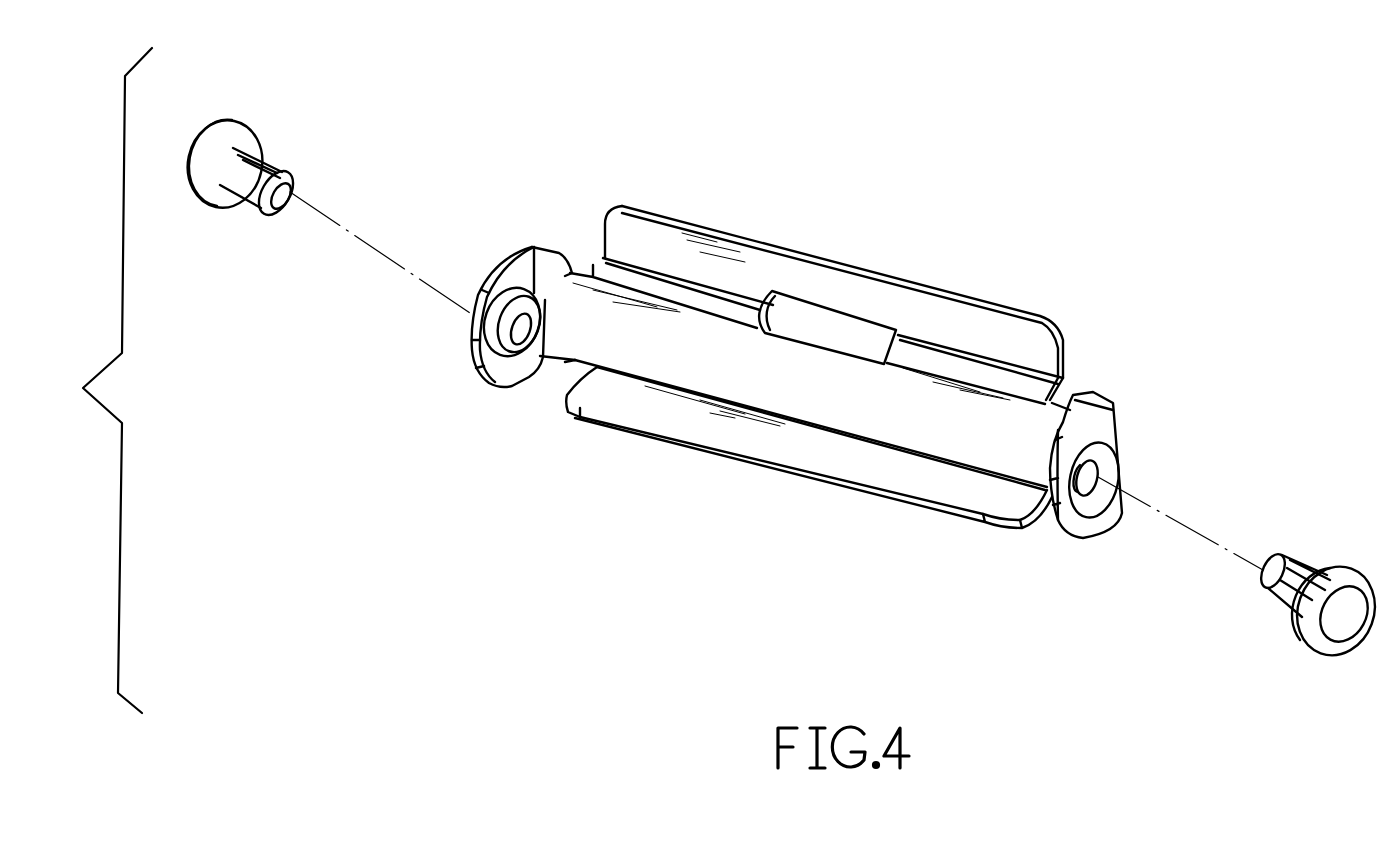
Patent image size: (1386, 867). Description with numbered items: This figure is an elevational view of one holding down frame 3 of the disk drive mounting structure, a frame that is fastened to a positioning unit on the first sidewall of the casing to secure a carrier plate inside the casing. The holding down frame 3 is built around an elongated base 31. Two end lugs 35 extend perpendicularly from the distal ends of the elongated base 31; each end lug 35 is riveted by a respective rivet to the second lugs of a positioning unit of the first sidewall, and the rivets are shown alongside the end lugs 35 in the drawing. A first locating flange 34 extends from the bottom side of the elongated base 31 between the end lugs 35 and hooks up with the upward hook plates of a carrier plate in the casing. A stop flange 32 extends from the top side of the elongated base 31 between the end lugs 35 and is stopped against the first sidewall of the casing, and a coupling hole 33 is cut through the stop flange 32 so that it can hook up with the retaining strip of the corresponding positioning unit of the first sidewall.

The holding down frame 3 is at (799, 361).
The elongated base 31 is at (640, 352).
The stop flange 32 is at (970, 325).
The coupling hole 33 is at (823, 318).
The first locating flange 34 is at (867, 473).
The end lugs 35 is at (497, 377).